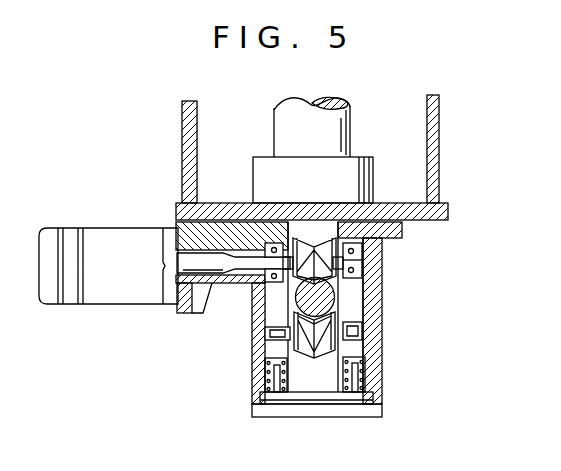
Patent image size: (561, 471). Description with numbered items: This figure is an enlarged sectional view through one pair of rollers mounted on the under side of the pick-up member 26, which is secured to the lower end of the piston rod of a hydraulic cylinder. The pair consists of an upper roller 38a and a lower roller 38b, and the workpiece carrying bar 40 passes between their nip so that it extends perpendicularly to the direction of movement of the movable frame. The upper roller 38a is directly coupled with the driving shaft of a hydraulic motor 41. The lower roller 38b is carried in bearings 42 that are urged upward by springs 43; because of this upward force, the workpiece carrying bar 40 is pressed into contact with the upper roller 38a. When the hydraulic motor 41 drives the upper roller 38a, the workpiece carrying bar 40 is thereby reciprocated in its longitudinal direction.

The pick-up member 26 is at (448, 202).
The upper roller 38a is at (343, 259).
The lower roller 38b is at (340, 350).
The workpiece carrying bar 40 is at (333, 295).
The hydraulic motor 41 is at (120, 298).
The bearings 42 is at (270, 345).
The springs 43 is at (362, 387).